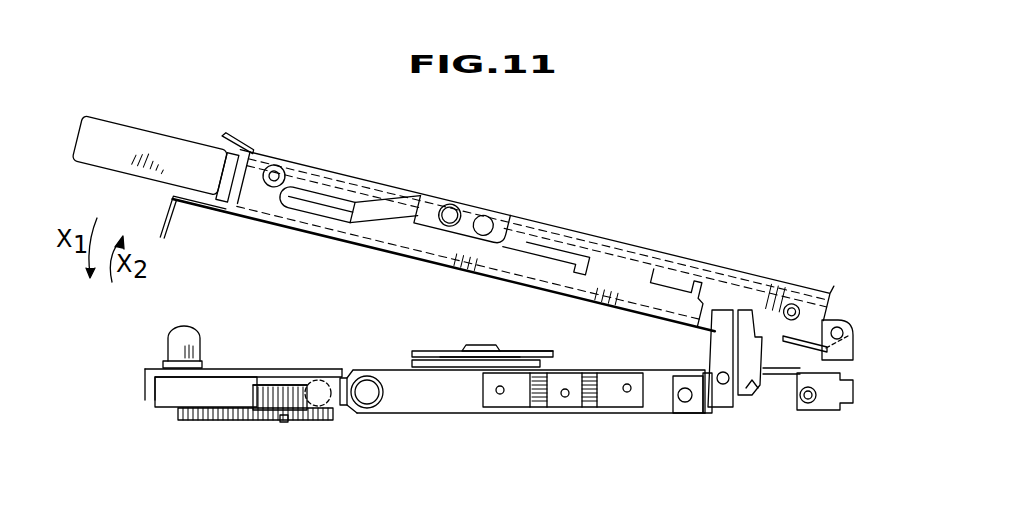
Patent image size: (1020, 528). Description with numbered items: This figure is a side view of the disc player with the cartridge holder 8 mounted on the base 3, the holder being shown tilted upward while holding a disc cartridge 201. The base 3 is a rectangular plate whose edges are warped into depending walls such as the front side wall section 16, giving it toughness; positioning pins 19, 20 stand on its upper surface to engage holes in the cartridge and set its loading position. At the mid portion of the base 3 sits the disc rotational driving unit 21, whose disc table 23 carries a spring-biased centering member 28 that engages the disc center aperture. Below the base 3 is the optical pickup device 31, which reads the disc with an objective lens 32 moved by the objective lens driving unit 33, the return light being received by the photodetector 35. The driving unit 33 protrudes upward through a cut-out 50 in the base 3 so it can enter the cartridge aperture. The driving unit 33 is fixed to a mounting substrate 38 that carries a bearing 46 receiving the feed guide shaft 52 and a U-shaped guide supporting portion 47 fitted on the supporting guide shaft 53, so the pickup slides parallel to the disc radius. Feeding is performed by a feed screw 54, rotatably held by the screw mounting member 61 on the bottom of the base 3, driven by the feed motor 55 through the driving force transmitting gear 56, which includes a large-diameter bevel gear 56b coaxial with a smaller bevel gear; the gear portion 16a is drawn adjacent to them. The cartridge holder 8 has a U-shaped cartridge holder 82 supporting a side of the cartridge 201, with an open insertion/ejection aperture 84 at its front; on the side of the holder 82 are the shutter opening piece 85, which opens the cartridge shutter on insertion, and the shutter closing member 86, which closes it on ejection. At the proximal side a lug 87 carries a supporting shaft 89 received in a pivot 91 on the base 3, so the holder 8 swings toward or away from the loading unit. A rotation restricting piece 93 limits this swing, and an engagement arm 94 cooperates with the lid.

The disc cartridge 201 is at (100, 122).
The cartridge holder 8 is at (348, 162).
The insertion/ejection aperture 84 is at (233, 188).
The shutter closing member 86 is at (318, 195).
The shutter opening piece 85 is at (550, 240).
The cartridge holder 82 is at (615, 262).
The lug 87 is at (845, 325).
The supporting shaft 89 is at (843, 338).
The pivot 91 is at (848, 356).
The base 3 is at (252, 369).
The front side wall section 16 is at (145, 388).
The gear portion 16a is at (265, 383).
The positioning pin 19 is at (168, 350).
The disc rotational driving unit 21 is at (430, 351).
The disc table 23 is at (547, 357).
The centering member 28 is at (470, 345).
The optical pickup device 31 is at (446, 412).
The objective lens 32 is at (490, 357).
The objective lens driving unit 33 is at (543, 362).
The photodetector 35 is at (617, 398).
The mounting substrate 38 is at (473, 405).
The bearing 46 is at (381, 400).
The guide supporting portion 47 is at (683, 407).
The cut-out 50 is at (304, 419).
The feed guide shaft 52 is at (368, 398).
The supporting guide shaft 53 is at (698, 403).
The feed screw 54 is at (320, 386).
The feed motor 55 is at (173, 397).
The driving force transmitting gear 56 is at (210, 420).
The large-diameter bevel gear 56b is at (249, 420).
The screw mounting member 61 is at (299, 378).
The rotation restricting piece 93 is at (730, 408).
The engagement arm 94 is at (757, 389).
The positioning pin 20 is at (807, 398).